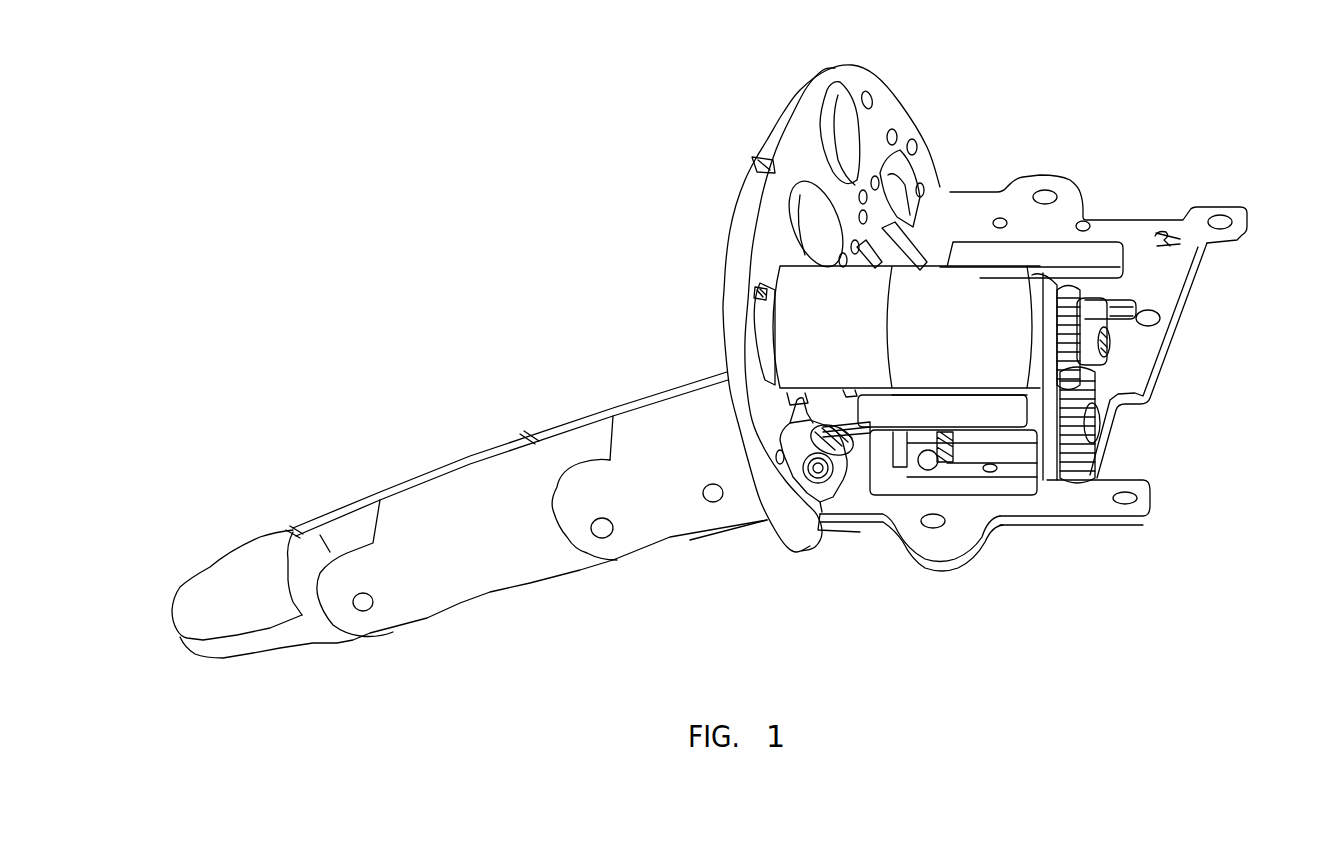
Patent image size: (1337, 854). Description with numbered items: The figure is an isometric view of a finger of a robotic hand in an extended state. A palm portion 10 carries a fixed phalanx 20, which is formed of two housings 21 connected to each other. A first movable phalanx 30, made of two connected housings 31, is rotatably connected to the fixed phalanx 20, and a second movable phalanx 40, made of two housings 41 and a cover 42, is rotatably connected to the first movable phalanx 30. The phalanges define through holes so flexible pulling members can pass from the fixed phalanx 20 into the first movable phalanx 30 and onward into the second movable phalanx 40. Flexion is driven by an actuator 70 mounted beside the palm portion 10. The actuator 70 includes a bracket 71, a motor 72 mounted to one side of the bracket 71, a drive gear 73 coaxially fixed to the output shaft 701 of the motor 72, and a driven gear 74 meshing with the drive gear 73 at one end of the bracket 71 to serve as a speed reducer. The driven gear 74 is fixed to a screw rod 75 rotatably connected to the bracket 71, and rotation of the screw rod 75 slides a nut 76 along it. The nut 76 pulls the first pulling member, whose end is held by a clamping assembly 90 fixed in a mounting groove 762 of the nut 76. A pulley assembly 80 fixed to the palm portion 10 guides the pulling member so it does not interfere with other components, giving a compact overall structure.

The palm portion 10 is at (1060, 220).
The fixed phalanx 20 is at (684, 530).
The housings 21 is at (732, 503).
The first movable phalanx 30 is at (513, 478).
The housings 31 is at (462, 503).
The second movable phalanx 40 is at (293, 530).
The housings 41 is at (328, 540).
The cover 42 is at (225, 590).
The actuator 70 is at (978, 296).
The motor 72 is at (1007, 297).
The drive gear 73 is at (1160, 325).
The motor shaft 701 is at (1110, 340).
The driven gear 74 is at (1097, 407).
The bracket 71 is at (1015, 485).
The screw rod 75 is at (1008, 440).
The nut 76 is at (891, 445).
The mounting groove 762 is at (926, 472).
The pulley assembly 80 is at (822, 504).
The clamping assembly 90 is at (947, 482).